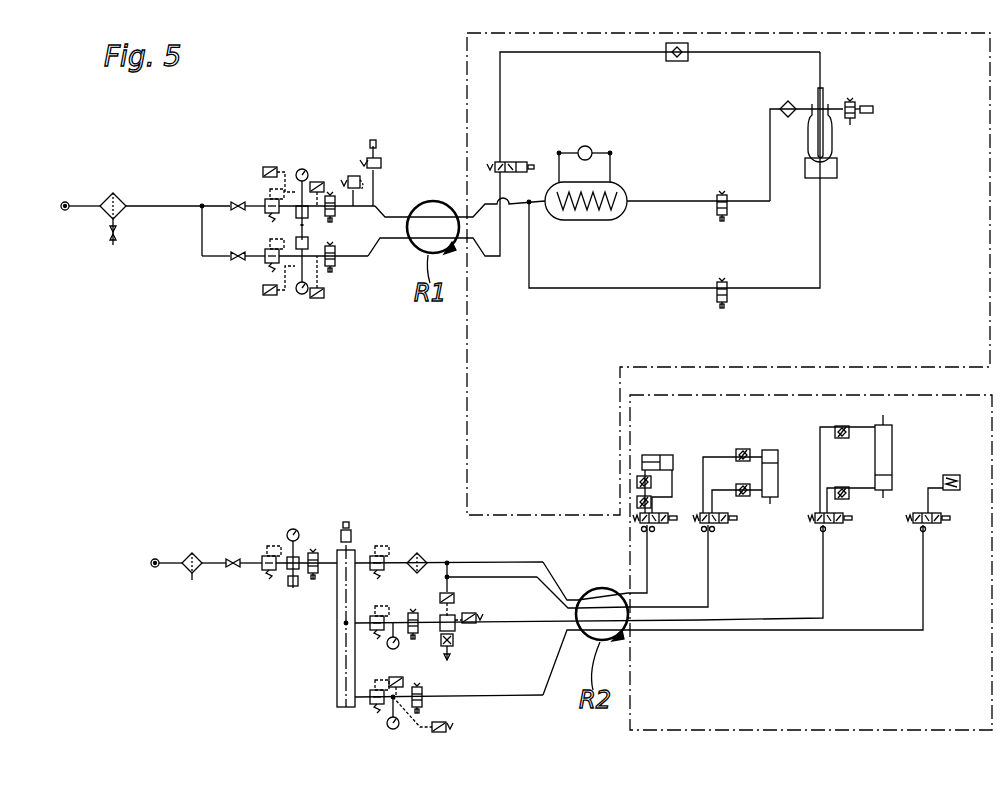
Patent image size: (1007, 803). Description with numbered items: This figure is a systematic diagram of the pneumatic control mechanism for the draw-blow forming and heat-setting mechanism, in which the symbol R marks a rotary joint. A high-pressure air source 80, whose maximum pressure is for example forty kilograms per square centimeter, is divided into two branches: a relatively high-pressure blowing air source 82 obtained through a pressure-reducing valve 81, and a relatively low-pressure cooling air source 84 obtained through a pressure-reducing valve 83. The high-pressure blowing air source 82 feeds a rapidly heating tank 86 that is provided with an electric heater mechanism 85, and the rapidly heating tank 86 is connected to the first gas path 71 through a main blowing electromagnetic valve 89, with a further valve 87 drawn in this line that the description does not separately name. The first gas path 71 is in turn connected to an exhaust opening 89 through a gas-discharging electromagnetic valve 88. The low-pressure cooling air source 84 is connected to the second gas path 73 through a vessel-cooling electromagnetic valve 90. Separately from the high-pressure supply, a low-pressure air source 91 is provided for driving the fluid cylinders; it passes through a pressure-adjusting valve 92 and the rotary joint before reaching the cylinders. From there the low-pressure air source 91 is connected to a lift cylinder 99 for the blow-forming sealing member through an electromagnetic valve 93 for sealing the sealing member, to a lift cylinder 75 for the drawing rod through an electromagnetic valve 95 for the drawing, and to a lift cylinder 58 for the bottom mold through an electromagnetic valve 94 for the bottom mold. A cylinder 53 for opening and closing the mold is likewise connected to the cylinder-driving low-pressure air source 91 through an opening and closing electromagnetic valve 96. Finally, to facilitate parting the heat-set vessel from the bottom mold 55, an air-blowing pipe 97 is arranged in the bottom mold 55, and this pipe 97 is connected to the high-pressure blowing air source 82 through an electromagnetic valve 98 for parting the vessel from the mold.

The high-pressure air source 80 is at (66, 201).
The pressure-reducing valve 81 is at (265, 203).
The high-pressure blowing air source 82 is at (390, 202).
The pressure-reducing valve 83 is at (265, 259).
The low-pressure cooling air source 84 is at (368, 260).
The electric heater mechanism 85 is at (620, 222).
The rapidly heating tank 86 is at (560, 222).
The throttle valve 87 is at (718, 196).
The gas-discharging electromagnetic valve 88 is at (856, 102).
The main blowing electromagnetic valve 89 is at (870, 114).
The vessel-cooling electromagnetic valve 90 is at (508, 160).
The low-pressure air source 91 is at (155, 558).
The pressure-adjusting valve 92 is at (262, 568).
The electromagnetic valve for sealing the sealing member 93 is at (937, 525).
The electromagnetic valve for the bottom mold 94 is at (730, 525).
The electromagnetic valve for the drawing 95 is at (843, 525).
The opening and closing electromagnetic valve 96 is at (660, 525).
The air-blowing pipe 97 is at (822, 245).
The electromagnetic valve for parting the vessel from the mold 98 is at (718, 284).
The cylinder for opening and closing the mold 53 is at (665, 455).
The bottom mold 55 is at (838, 172).
The lift cylinder for the bottom mold 58 is at (775, 450).
The first gas path 71 is at (806, 110).
The second gas path 73 is at (822, 72).
The lift cylinder for the drawing rod 75 is at (893, 437).
The lift cylinder for the blow-forming sealing member 99 is at (955, 475).